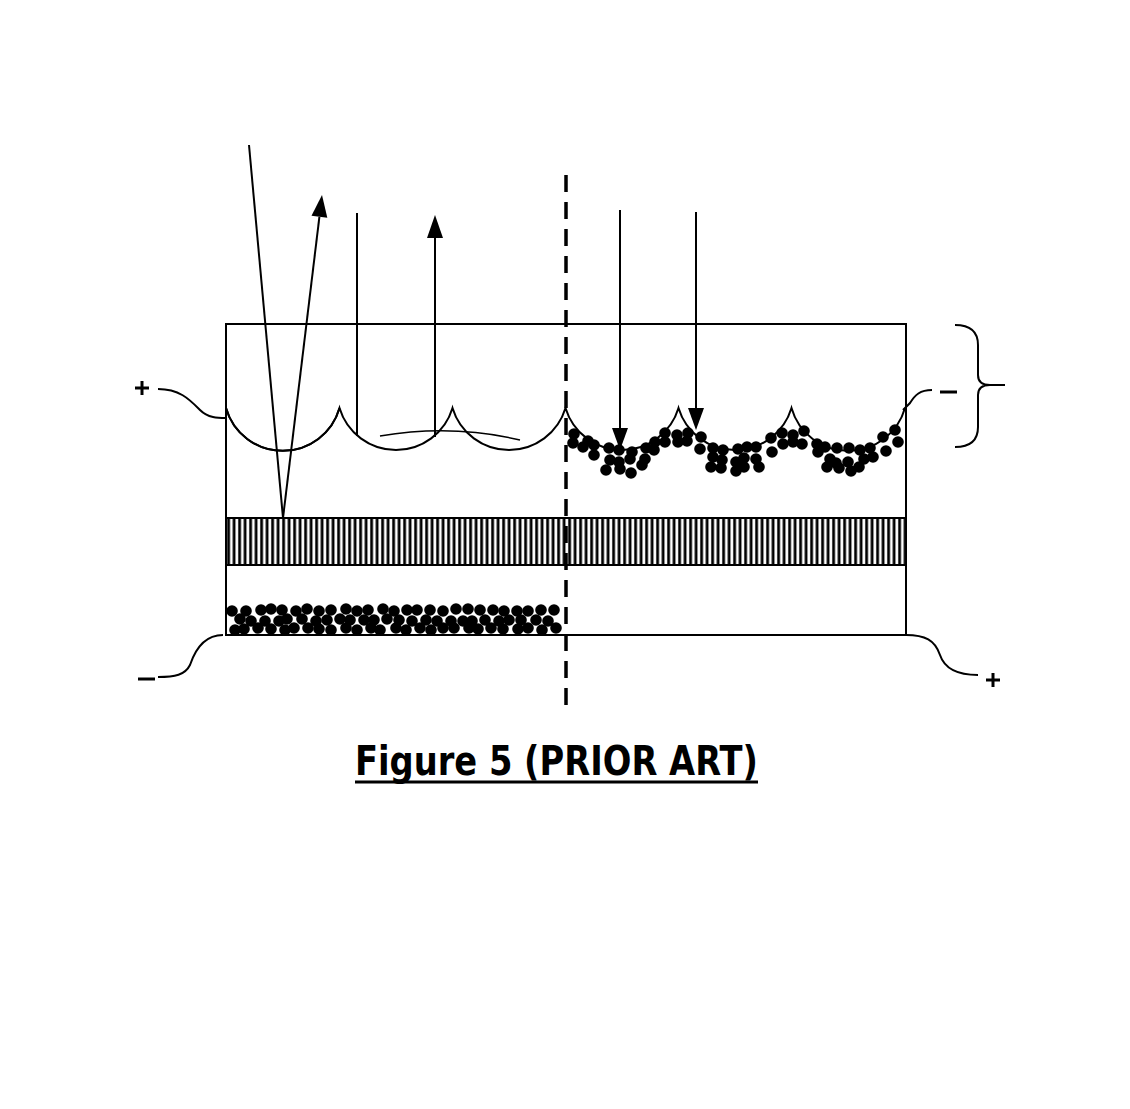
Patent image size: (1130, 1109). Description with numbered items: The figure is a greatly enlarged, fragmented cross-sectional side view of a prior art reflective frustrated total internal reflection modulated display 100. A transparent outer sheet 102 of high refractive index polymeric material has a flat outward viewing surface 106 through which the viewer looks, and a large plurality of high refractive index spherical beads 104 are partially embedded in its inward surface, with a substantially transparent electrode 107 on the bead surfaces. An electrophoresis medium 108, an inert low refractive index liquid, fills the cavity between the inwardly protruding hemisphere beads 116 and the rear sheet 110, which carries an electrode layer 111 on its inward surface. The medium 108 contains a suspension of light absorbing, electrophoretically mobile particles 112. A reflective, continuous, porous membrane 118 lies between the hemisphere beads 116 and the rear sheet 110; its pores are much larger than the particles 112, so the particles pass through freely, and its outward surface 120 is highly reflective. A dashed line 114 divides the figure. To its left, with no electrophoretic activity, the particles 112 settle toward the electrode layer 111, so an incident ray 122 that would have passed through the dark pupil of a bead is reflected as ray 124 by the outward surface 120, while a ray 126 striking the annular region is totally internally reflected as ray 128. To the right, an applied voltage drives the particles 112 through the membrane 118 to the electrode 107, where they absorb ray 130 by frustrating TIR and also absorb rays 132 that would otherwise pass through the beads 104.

The reflective frustrated total internal reflection modulated display 100 is at (870, 276).
The transparent outer sheet 102 is at (226, 348).
The spherical beads 104 is at (985, 386).
The outward viewing surface 106 is at (747, 324).
The transparent electrode 107 is at (280, 450).
The electrophoresis medium 108 is at (448, 501).
The rear sheet 110 is at (870, 635).
The electrode layer 111 is at (845, 635).
The electrophoretically mobile particles 112 is at (505, 605).
The dashed line 114 is at (566, 197).
The hemisphere beads 116 is at (541, 441).
The reflective porous membrane 118 is at (930, 540).
The outward surface of membrane 120 is at (250, 518).
The incident light ray 122 is at (253, 215).
The reflected light ray 124 is at (314, 262).
The incident light ray 126 is at (357, 230).
The totally internally reflected light ray 128 is at (435, 285).
The light ray 130 is at (696, 234).
The light rays 132 is at (620, 223).